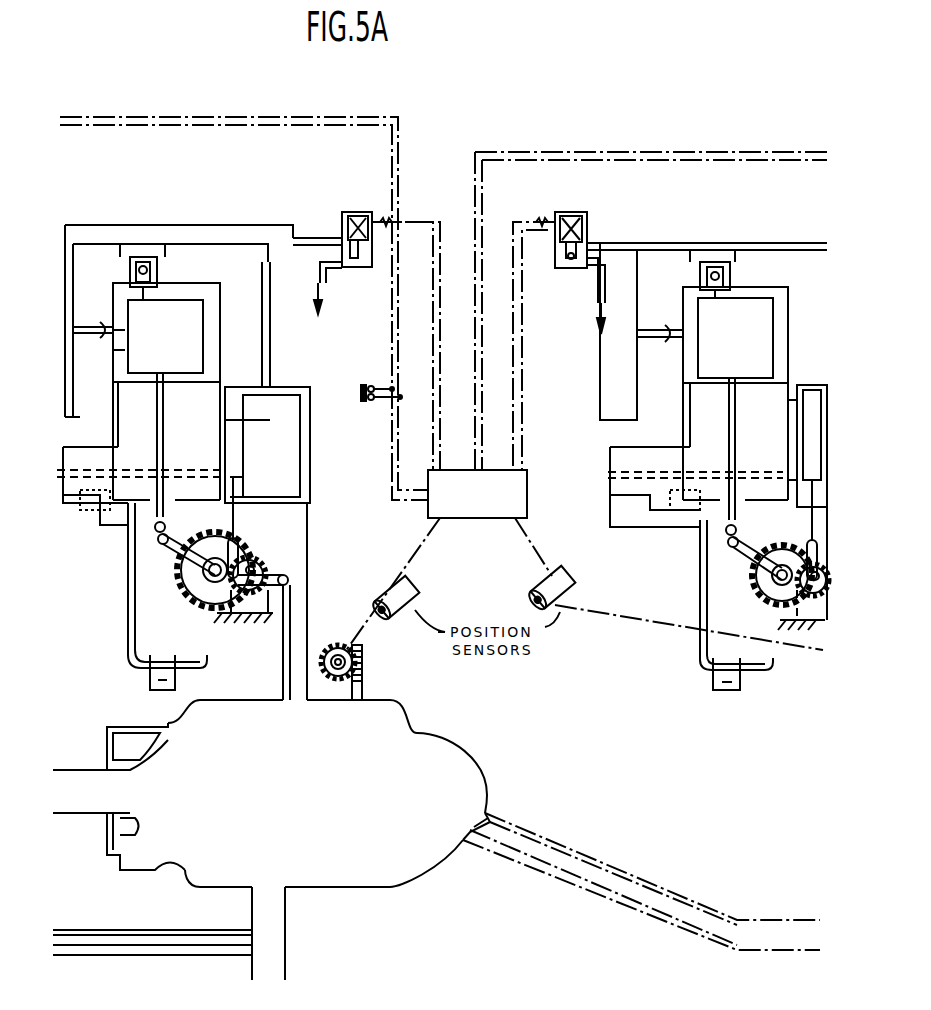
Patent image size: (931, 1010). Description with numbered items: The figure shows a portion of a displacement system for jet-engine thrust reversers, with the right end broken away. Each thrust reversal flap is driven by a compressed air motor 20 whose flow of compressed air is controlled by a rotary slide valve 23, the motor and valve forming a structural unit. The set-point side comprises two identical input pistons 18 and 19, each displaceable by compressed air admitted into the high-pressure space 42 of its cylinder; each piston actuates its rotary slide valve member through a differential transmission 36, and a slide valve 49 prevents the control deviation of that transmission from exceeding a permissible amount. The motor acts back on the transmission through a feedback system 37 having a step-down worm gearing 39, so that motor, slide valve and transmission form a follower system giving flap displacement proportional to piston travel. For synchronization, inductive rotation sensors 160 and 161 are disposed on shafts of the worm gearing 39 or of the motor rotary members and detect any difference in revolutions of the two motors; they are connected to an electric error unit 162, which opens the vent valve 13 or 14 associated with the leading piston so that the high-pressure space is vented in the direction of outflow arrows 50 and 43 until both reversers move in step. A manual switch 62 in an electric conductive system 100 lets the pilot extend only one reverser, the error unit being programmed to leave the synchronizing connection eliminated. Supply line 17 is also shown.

The vent valve 13 is at (355, 212).
The vent valve 14 is at (567, 212).
The supply line 17 is at (656, 152).
The input piston 18 is at (208, 340).
The input piston 19 is at (792, 350).
The compressed air motor 20 is at (439, 883).
The rotary slide valve 23 is at (148, 758).
The differential transmission 36 is at (290, 538).
The feedback system 37 is at (333, 646).
The step-down worm gearing 39 is at (396, 663).
The high-pressure space 42 is at (770, 297).
The outflow arrow 43 is at (601, 305).
The slide valve 49 is at (286, 461).
The outflow arrow 50 is at (320, 297).
The manual switch 62 is at (378, 383).
The electric conductive system 100 is at (396, 457).
The inductive rotation sensor 160 is at (395, 583).
The inductive rotation sensor 161 is at (575, 580).
The electric error unit 162 is at (530, 500).